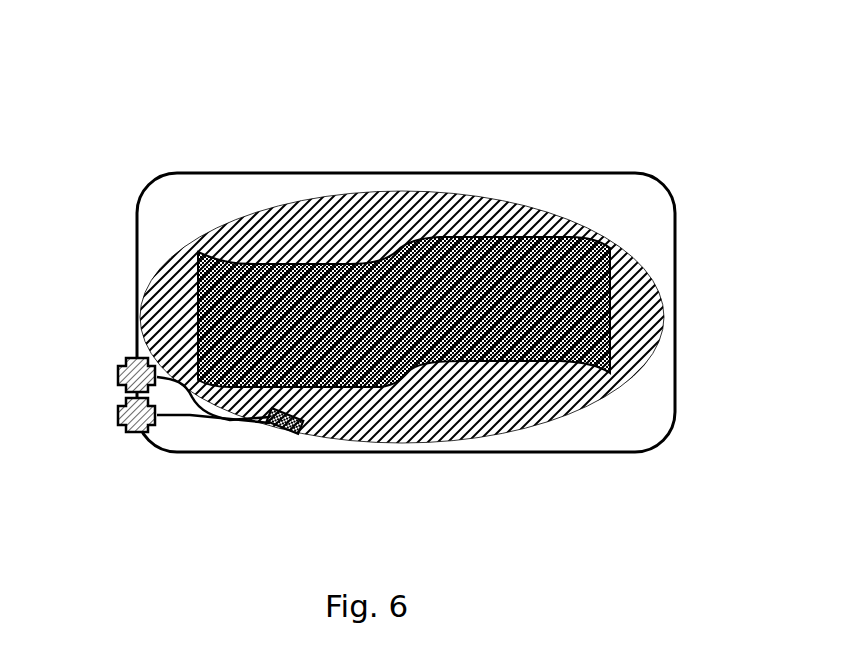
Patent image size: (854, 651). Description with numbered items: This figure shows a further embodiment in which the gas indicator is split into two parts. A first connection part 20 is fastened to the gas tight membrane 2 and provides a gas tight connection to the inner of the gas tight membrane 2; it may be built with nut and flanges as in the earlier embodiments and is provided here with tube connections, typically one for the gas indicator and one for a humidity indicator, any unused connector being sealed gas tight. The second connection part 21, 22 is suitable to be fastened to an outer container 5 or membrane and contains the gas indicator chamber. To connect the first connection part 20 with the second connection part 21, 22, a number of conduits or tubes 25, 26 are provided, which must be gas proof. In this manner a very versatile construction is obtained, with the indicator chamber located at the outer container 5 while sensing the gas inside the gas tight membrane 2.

The outer container 5 is at (260, 167).
The gas tight membrane 2 is at (602, 398).
The first connection part 20 is at (285, 428).
The second connection part 21 is at (118, 373).
The second connection part 22 is at (120, 413).
The conduit/tube 25 is at (164, 382).
The conduit/tube 26 is at (192, 418).